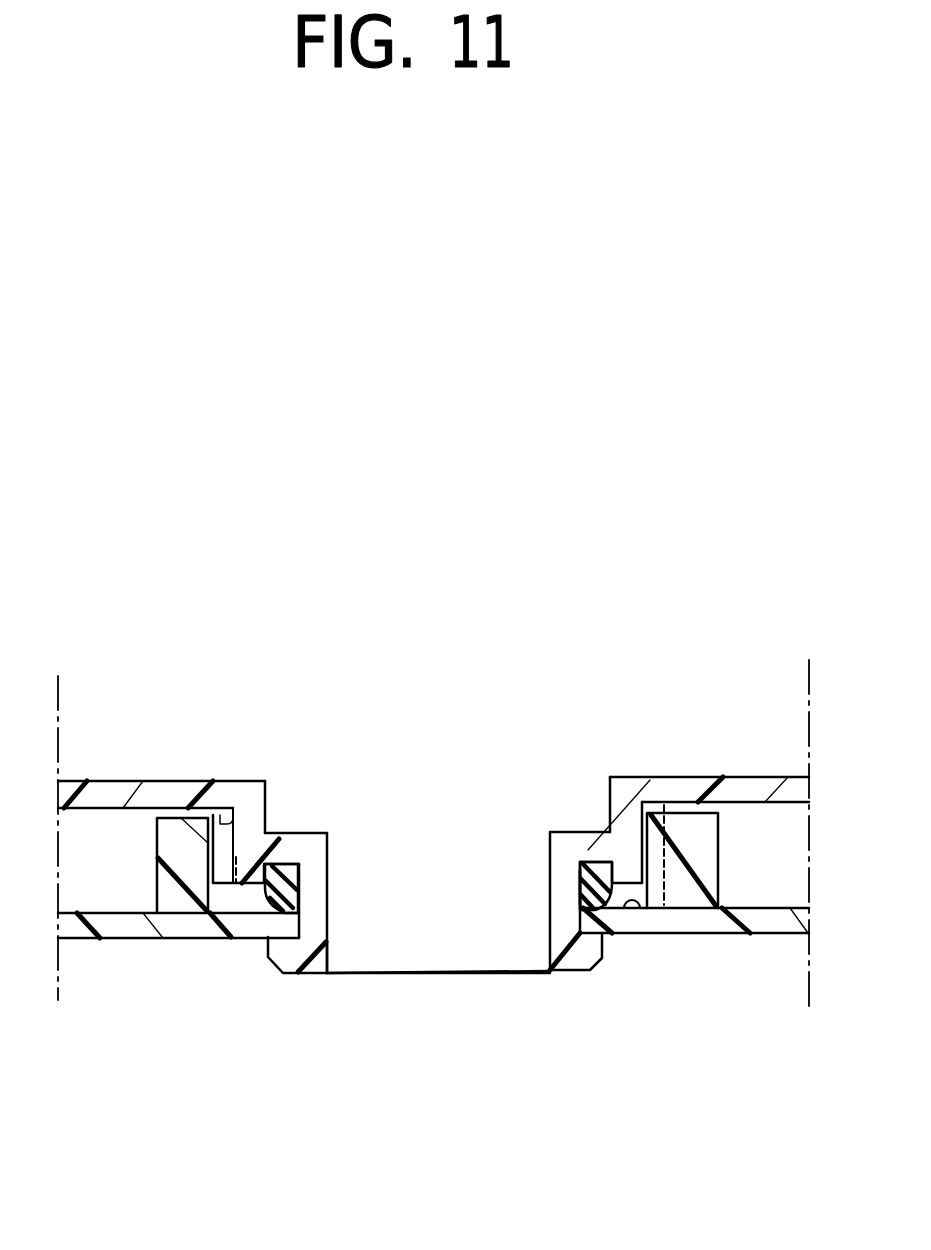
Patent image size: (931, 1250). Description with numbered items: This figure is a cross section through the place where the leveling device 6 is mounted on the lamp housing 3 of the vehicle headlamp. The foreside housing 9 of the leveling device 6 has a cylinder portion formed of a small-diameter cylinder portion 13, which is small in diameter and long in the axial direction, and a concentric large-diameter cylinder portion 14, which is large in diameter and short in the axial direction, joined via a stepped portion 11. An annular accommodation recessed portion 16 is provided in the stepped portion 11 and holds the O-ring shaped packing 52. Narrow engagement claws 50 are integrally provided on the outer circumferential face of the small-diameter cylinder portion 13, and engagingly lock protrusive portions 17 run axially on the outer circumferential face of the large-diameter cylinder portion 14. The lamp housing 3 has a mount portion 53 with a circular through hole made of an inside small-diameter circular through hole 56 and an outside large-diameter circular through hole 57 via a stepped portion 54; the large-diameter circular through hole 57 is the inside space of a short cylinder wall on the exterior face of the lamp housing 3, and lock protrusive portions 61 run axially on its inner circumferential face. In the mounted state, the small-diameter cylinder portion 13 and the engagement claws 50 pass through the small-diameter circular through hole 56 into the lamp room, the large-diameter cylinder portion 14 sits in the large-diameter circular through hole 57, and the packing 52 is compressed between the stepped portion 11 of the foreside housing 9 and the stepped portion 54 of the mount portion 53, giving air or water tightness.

The lamp housing 3 is at (96, 953).
The leveling device 6 is at (768, 770).
The foreside housing 9 is at (105, 781).
The stepped portion 11 is at (578, 878).
The small-diameter cylinder portion 13 is at (322, 908).
The large-diameter cylinder portion 14 is at (230, 858).
The accommodation recessed portion 16 is at (578, 878).
The engagingly lock protrusive portion 17 is at (238, 857).
The engagement claw 50 is at (272, 973).
The packing 52 is at (301, 866).
The mount portion 53 is at (777, 935).
The stepped portion 54 is at (633, 908).
The small-diameter circular through hole 56 is at (327, 953).
The large-diameter circular through hole 57 is at (233, 806).
The lock protrusive portion 61 is at (222, 897).